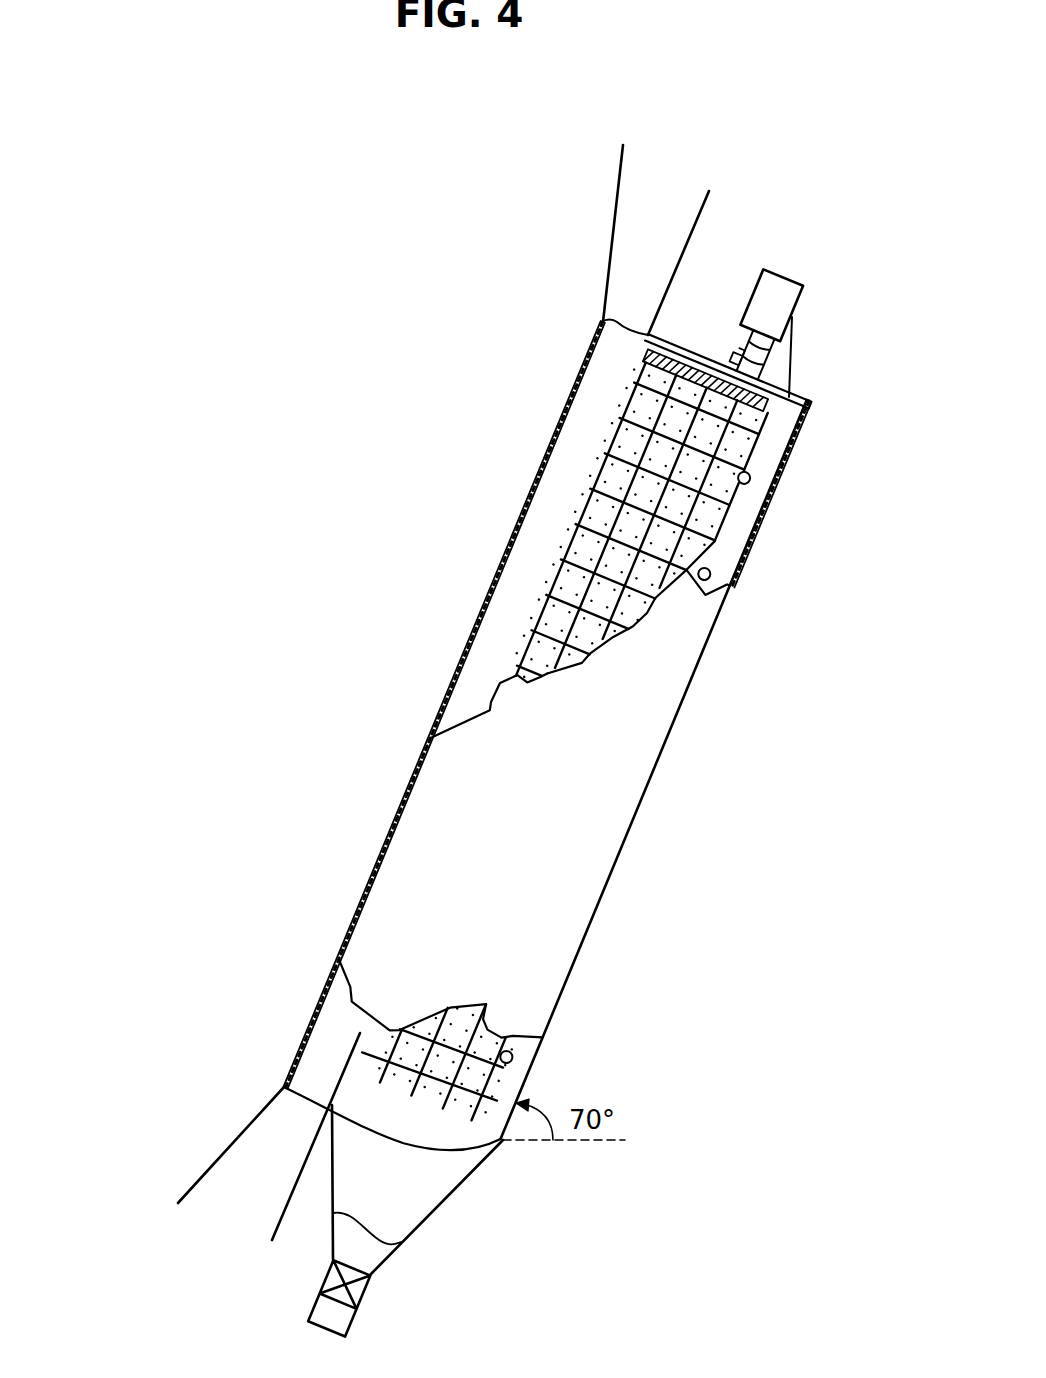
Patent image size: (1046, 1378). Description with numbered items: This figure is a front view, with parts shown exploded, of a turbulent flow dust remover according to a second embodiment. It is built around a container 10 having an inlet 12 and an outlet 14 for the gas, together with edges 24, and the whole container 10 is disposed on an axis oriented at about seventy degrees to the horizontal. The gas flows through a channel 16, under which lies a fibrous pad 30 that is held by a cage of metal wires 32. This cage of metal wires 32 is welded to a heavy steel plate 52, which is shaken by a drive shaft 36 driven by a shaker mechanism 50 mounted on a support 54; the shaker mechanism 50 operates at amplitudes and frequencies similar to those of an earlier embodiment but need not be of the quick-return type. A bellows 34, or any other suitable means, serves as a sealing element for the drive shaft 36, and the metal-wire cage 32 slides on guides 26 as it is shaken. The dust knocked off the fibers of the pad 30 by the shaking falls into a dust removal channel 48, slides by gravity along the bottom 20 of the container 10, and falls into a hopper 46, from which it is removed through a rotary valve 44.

The container 10 is at (446, 704).
The inlet 12 is at (633, 198).
The outlet 14 is at (253, 1158).
The channel 16 is at (563, 462).
The bottom 20 is at (571, 980).
The edges 24 is at (644, 365).
The guides 26 is at (750, 478).
The fibrous pad 30 is at (560, 580).
The cage of metal wires 32 is at (533, 647).
The bellows 34 is at (757, 370).
The drive shaft 36 is at (768, 346).
The rotary valve 44 is at (358, 1295).
The hopper 46 is at (413, 1213).
The dust removal channel 48 is at (740, 536).
The shaker mechanism 50 is at (807, 287).
The heavy steel plate 52 is at (642, 336).
The support 54 is at (778, 375).